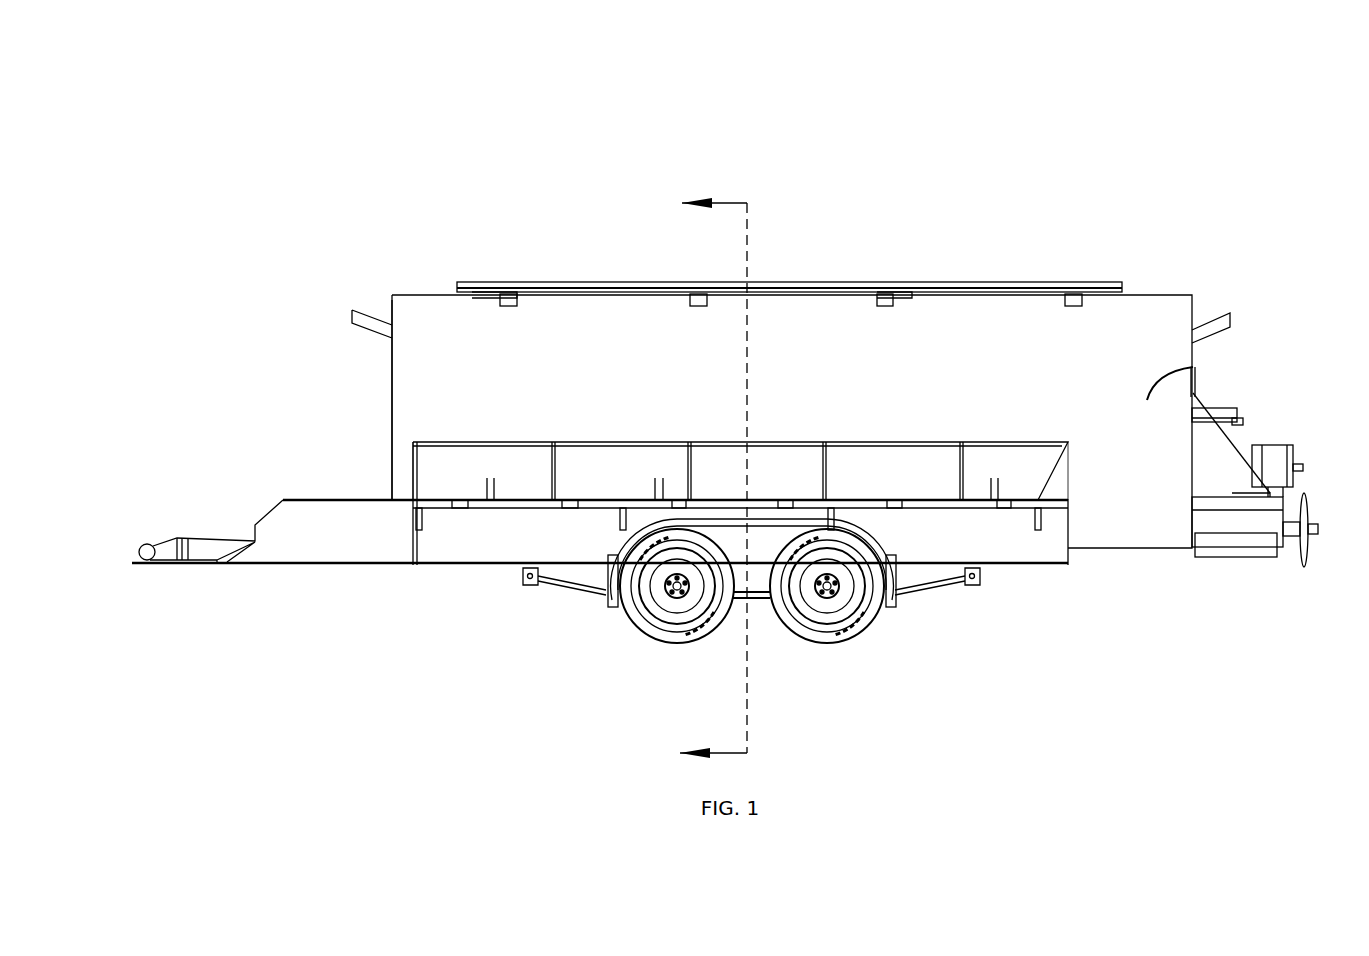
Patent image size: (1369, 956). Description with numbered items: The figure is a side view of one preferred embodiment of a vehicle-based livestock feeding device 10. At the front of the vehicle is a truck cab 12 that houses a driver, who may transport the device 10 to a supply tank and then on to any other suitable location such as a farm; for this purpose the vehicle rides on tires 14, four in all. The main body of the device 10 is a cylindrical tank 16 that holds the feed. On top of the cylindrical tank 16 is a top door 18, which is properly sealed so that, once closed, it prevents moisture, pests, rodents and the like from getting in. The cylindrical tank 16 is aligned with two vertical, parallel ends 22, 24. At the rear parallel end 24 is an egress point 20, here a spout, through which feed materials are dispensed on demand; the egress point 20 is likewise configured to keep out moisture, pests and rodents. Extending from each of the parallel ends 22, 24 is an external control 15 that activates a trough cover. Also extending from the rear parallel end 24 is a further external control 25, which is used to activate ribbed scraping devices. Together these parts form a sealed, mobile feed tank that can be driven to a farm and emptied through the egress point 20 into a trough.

The vehicle-based livestock feeding device 10 is at (780, 250).
The truck cab 12 is at (137, 550).
The tires 14 is at (633, 628).
The external control 15 is at (352, 310).
The cylindrical tank 16 is at (912, 368).
The top door 18 is at (594, 282).
The egress point 20 is at (1248, 522).
The parallel end 22 is at (390, 400).
The rear parallel end 24 is at (1197, 352).
The external control 25 is at (1243, 420).